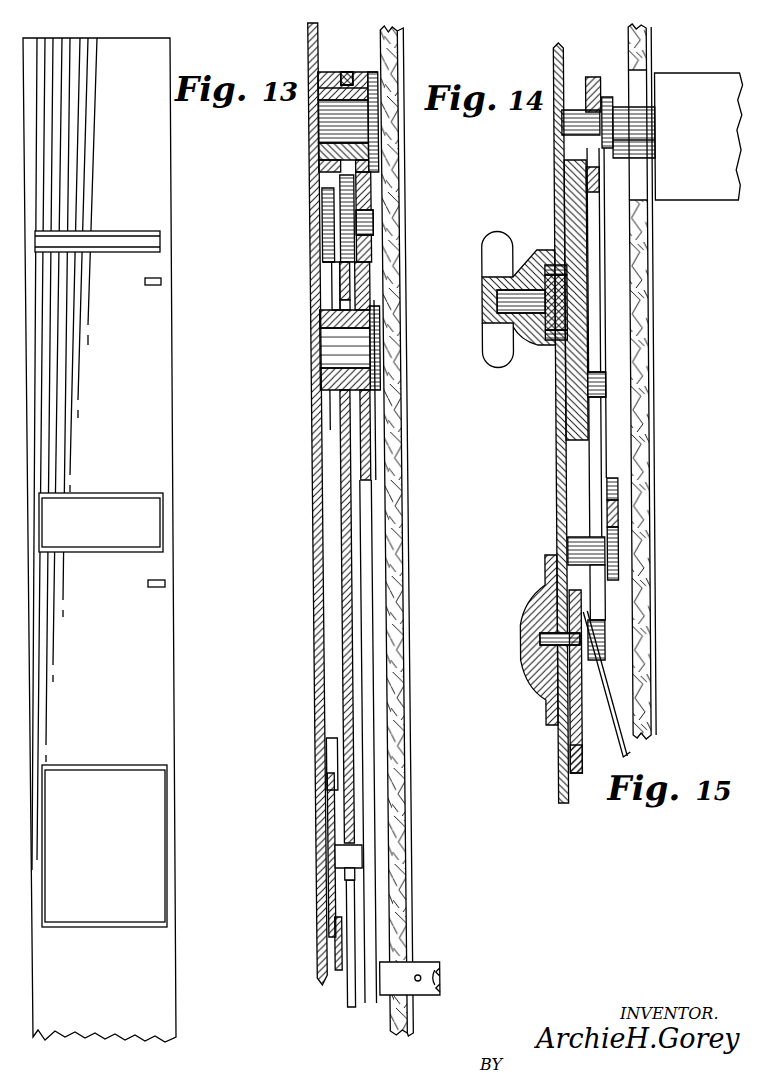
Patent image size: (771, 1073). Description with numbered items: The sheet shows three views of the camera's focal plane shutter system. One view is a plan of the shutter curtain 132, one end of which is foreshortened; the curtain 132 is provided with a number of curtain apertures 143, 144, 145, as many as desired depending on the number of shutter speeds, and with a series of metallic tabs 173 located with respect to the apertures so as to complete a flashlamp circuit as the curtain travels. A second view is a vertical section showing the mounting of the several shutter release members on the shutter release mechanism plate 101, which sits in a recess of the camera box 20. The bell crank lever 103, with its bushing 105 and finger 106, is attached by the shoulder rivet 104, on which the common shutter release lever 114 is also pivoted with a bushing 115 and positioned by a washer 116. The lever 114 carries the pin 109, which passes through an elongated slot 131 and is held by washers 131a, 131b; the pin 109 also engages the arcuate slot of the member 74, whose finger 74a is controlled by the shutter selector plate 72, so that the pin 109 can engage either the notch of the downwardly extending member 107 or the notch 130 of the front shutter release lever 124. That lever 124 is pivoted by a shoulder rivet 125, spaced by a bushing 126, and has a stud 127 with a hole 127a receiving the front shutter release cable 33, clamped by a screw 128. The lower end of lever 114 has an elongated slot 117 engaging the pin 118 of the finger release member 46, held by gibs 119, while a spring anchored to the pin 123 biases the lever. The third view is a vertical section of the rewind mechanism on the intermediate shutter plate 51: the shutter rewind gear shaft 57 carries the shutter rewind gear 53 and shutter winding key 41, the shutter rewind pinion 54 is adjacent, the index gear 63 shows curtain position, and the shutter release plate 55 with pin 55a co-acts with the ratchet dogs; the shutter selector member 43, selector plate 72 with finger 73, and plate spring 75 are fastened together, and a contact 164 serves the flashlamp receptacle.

In FIG. 13, the curtain 132 is at (152, 681).
In FIG. 13, the curtain aperture 143 is at (148, 241).
In FIG. 13, the curtain aperture 144 is at (150, 524).
In FIG. 13, the curtain aperture 145 is at (143, 832).
In FIG. 13, the metallic tab 173 is at (187, 584).
In FIG. 14, the camera box 20 is at (398, 571).
In FIG. 15, the camera box 20 is at (646, 531).
In FIG. 14, the shutter release mechanism plate 101 is at (314, 47).
In FIG. 14, the bell crank lever 103 is at (372, 70).
In FIG. 14, the bushing 105 is at (335, 88).
In FIG. 14, the washer 116 is at (346, 76).
In FIG. 14, the shoulder rivet 104 is at (340, 122).
In FIG. 14, the bushing 115 is at (340, 165).
In FIG. 14, the downwardly extending member 107 is at (364, 194).
In FIG. 14, the pin 109 is at (370, 222).
In FIG. 14, the member of the shutter release mechanism 74 is at (328, 254).
In FIG. 14, the notch 130 is at (370, 244).
In FIG. 14, the washer 131b is at (358, 264).
In FIG. 14, the washer 131a is at (333, 266).
In FIG. 14, the elongated slot 131 is at (331, 275).
In FIG. 14, the pin 123 is at (364, 298).
In FIG. 14, the shoulder rivet 125 is at (378, 372).
In FIG. 14, the bushing 126 is at (333, 388).
In FIG. 14, the front shutter release lever 124 is at (362, 502).
In FIG. 14, the common shutter release lever 114 is at (334, 545).
In FIG. 14, the gib 119 is at (323, 958).
In FIG. 14, the finger release member 46 is at (317, 905).
In FIG. 14, the pin 118 is at (345, 856).
In FIG. 14, the elongated opening or slot 117 is at (344, 876).
In FIG. 14, the stud 127 is at (420, 993).
In FIG. 14, the front shutter release cable 33 is at (411, 974).
In FIG. 14, the hole 127a is at (420, 975).
In FIG. 14, the screw 128 is at (433, 989).
In FIG. 15, the shutter rewind pinion 54 is at (640, 130).
In FIG. 15, the intermediate shutter plate 51 is at (557, 784).
In FIG. 15, the shutter release plate 55 is at (597, 470).
In FIG. 15, the contact 164 is at (575, 548).
In FIG. 15, the shutter rewind gear 53 is at (570, 190).
In FIG. 15, the shutter winding key 41 is at (493, 292).
In FIG. 15, the shutter rewind gear shaft 57 is at (524, 290).
In FIG. 15, the speed indicating or index gear 63 is at (600, 375).
In FIG. 15, the pin 55a is at (617, 486).
In FIG. 15, the finger 106 is at (616, 512).
In FIG. 15, the finger 73 is at (597, 655).
In FIG. 15, the shutter selector member 43 is at (530, 655).
In FIG. 15, the shutter selector plate 72 is at (576, 735).
In FIG. 15, the finger 74a is at (566, 752).
In FIG. 15, the plate spring 75 is at (634, 750).